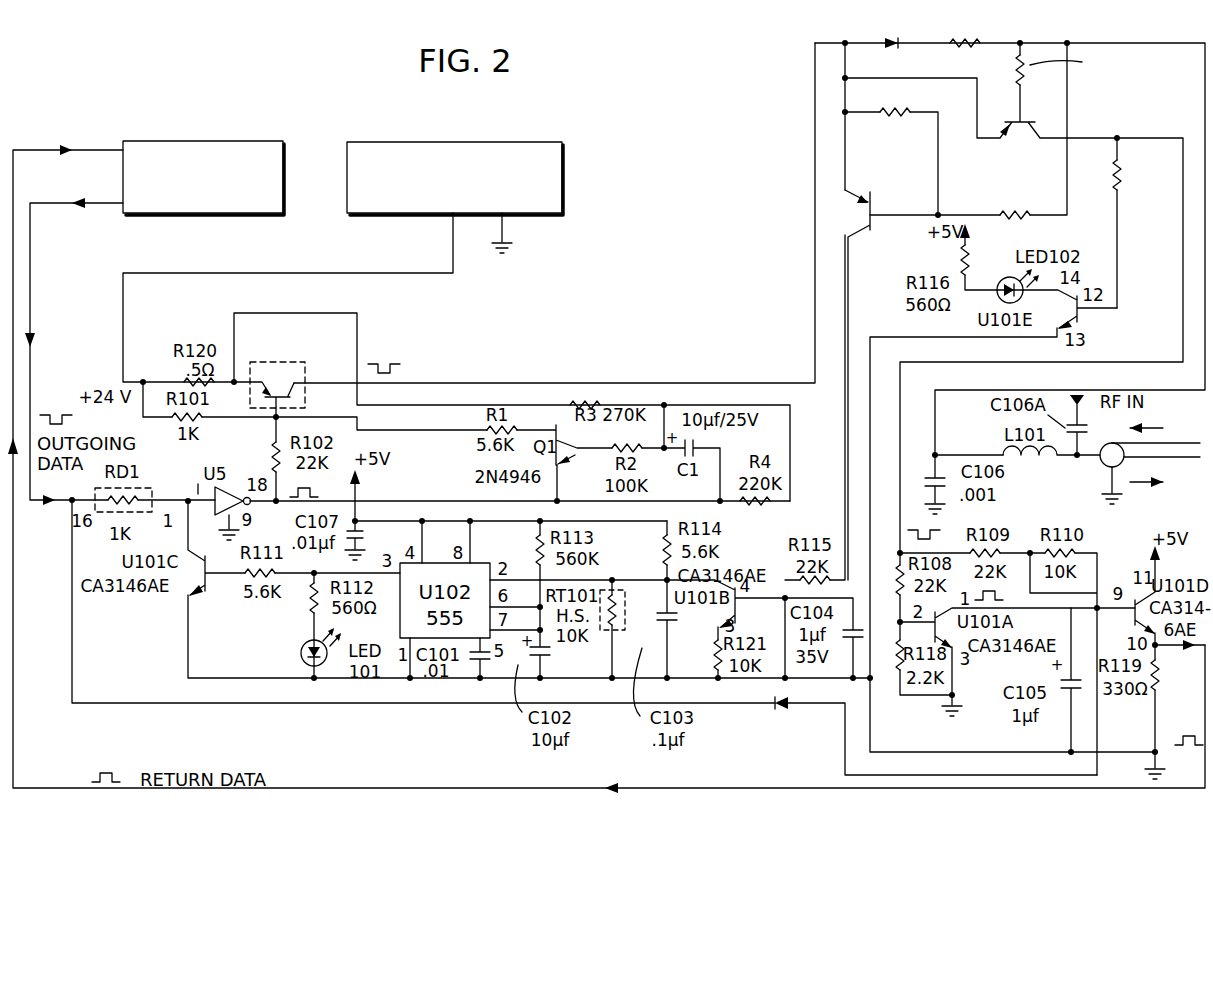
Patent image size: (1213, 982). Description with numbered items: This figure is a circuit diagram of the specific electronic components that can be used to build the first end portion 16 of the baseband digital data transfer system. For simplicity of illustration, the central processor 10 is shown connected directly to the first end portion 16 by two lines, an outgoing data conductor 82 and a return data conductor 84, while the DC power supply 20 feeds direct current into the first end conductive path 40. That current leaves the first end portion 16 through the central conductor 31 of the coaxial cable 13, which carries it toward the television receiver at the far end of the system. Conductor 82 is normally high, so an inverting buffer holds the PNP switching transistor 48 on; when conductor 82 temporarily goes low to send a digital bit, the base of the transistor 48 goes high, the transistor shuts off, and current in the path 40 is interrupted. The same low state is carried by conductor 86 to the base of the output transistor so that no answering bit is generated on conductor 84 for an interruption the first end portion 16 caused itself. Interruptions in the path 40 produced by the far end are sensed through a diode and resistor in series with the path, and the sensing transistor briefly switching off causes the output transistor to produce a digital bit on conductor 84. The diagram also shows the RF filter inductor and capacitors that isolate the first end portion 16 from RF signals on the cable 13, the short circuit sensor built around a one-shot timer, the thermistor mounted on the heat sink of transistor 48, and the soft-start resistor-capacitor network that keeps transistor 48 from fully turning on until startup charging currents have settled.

The central processor 10 is at (255, 209).
The DC power supply 20 is at (536, 206).
The first end portion 16 is at (718, 296).
The first end conductive path 40 is at (123, 307).
The transistor 48 is at (270, 398).
The conductor 82 is at (30, 275).
The conductor 84 is at (13, 367).
The conductor 86 is at (327, 703).
The coaxial cable 13 is at (1178, 440).
The central conductor 31 is at (1172, 458).